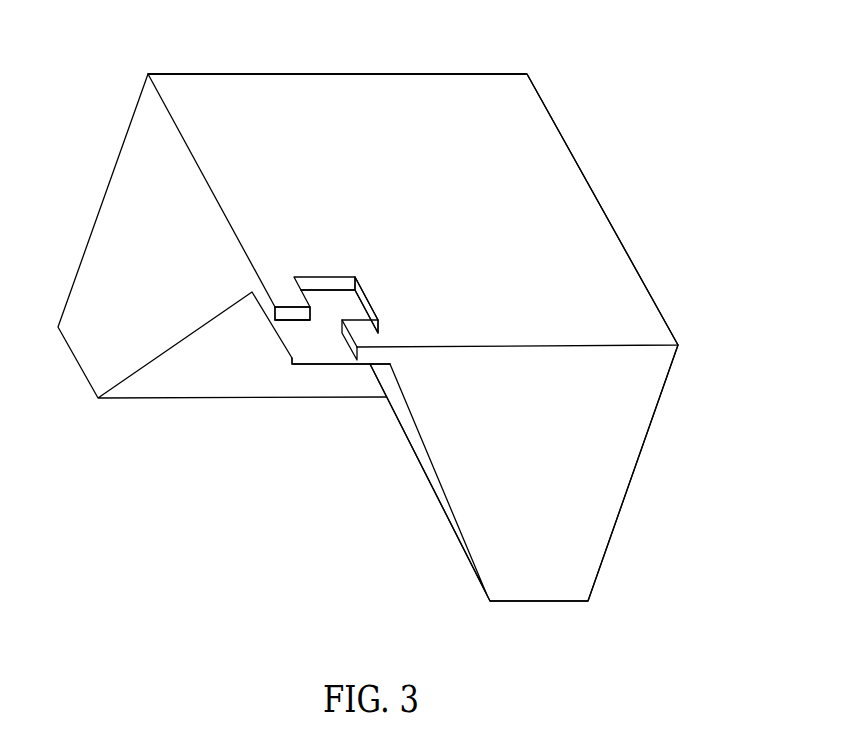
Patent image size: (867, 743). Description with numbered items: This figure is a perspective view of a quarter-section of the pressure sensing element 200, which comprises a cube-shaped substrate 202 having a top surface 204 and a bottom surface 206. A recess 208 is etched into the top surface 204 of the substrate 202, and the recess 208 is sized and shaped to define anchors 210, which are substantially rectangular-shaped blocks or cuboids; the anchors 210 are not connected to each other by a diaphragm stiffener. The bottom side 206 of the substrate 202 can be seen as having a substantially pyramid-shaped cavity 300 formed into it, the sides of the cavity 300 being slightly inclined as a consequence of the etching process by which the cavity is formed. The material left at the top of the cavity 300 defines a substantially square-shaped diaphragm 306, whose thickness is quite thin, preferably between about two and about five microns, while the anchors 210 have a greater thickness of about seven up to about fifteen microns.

The pressure sensing element 200 is at (676, 85).
The substrate 202 is at (556, 124).
The top surface 204 is at (242, 87).
The bottom surface 206 is at (546, 605).
The recess 208 is at (340, 310).
The anchors 210 is at (282, 287).
The cavity 300 is at (250, 434).
The diaphragm 306 is at (308, 342).